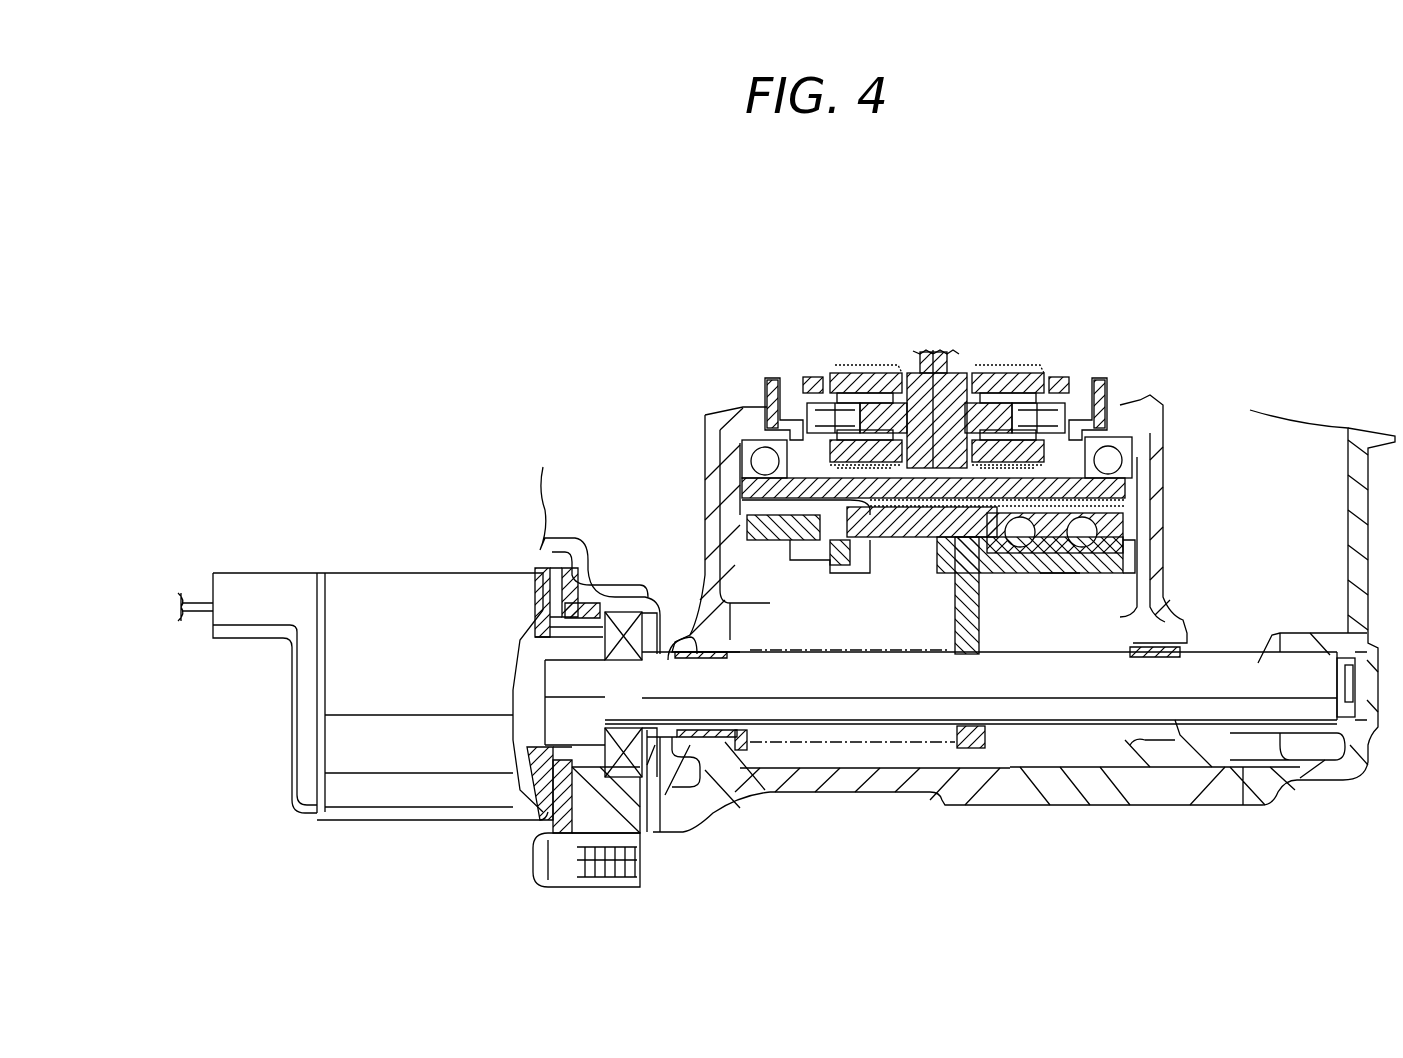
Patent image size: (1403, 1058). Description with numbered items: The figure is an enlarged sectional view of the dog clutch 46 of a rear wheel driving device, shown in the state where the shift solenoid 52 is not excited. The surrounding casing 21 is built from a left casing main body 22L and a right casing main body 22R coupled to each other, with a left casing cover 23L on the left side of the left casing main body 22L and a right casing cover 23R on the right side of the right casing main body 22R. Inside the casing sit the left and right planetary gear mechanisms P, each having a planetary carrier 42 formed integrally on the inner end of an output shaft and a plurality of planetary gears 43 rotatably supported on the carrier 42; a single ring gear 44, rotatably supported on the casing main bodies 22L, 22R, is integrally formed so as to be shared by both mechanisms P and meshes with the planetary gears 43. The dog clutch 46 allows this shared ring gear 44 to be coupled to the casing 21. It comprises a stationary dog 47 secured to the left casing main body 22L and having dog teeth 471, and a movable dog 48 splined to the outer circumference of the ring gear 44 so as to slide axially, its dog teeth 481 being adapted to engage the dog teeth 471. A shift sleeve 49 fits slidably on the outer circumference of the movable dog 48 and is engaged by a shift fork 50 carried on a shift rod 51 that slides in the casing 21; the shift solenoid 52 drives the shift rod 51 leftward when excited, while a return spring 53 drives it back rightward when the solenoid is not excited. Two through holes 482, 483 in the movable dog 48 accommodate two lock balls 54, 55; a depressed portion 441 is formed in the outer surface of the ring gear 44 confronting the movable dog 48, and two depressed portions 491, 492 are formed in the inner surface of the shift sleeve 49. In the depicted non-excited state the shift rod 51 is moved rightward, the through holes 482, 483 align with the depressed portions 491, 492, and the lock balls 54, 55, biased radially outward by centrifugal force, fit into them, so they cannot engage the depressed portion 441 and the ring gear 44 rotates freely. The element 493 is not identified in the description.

The planetary gear mechanism P is at (877, 335).
The casing 21 is at (970, 808).
The left casing main body 22L is at (887, 793).
The right casing main body 22R is at (1197, 793).
The left casing cover 23L is at (643, 835).
The right casing cover 23R is at (1267, 787).
The planetary carrier 42 is at (800, 372).
The planetary gear 43 is at (850, 365).
The ring gear 44 is at (900, 478).
The depressed portion 441 is at (983, 367).
The dog clutch 46 is at (1057, 790).
The stationary dog 47 is at (743, 530).
The dog teeth 471 is at (795, 543).
The movable dog 48 is at (907, 545).
The dog teeth 481 is at (742, 506).
The through hole 482 is at (1110, 500).
The through hole 483 is at (1110, 505).
The shift sleeve 49 is at (1100, 580).
The depressed portion 491 is at (1000, 575).
The depressed portion 492 is at (1100, 548).
The output ring hub 493 is at (1065, 583).
The shift fork 50 is at (962, 656).
The shift rod 51 is at (1258, 663).
The shift solenoid 52 is at (360, 553).
The return spring 53 is at (740, 737).
The lock ball 54 is at (1020, 548).
The lock ball 55 is at (1100, 550).